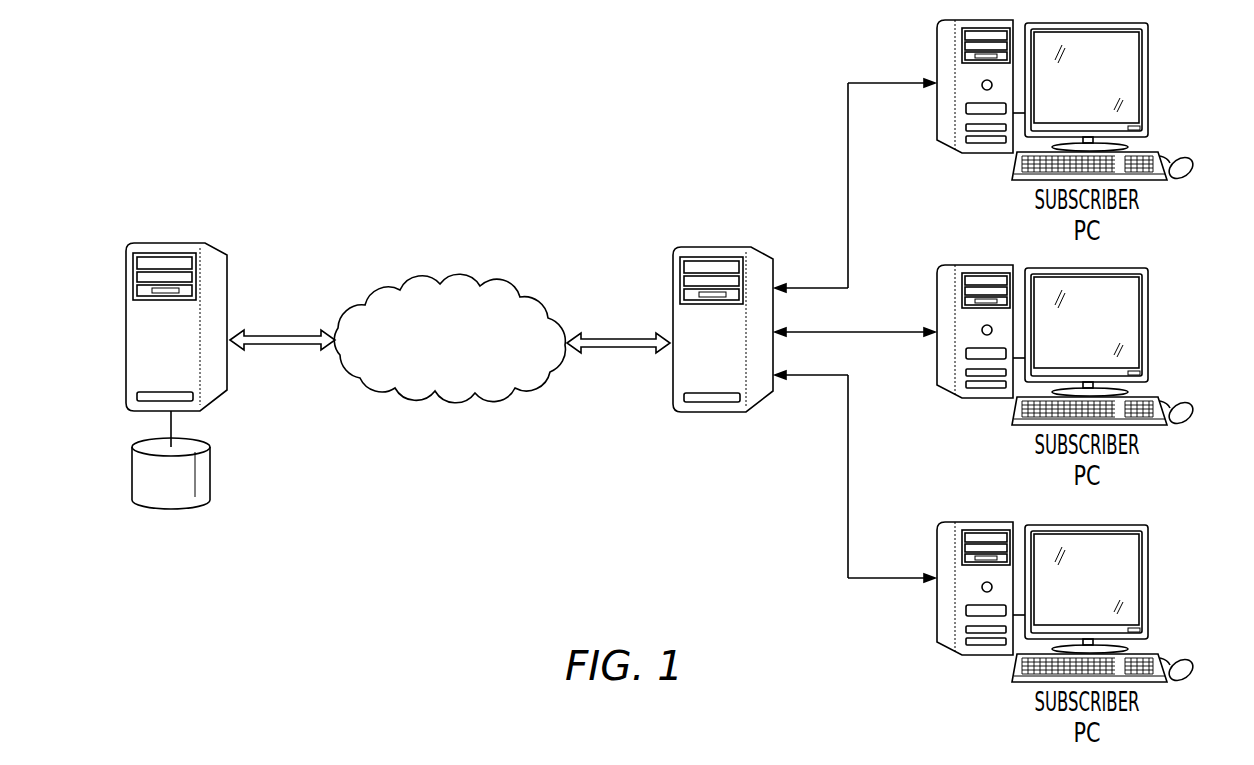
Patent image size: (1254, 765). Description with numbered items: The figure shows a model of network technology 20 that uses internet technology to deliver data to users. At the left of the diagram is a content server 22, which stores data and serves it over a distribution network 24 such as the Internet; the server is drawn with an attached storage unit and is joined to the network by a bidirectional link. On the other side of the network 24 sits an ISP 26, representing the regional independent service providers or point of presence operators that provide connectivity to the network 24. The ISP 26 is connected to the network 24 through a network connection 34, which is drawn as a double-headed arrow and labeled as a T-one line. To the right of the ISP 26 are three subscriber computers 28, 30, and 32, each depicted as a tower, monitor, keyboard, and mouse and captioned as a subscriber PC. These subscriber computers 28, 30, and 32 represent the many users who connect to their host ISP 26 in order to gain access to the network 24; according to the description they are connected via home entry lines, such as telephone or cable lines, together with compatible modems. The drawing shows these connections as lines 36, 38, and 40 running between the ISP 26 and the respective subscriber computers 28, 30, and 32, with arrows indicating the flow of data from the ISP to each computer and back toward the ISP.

The network technology 20 is at (352, 176).
The content server 22 is at (172, 243).
The distribution network 24 is at (453, 284).
The ISP 26 is at (719, 247).
The subscriber computer 28 is at (1148, 70).
The subscriber computer 30 is at (1148, 316).
The subscriber computer 32 is at (1148, 572).
The network connection 34 is at (620, 330).
The link between ISP and subscriber PC 28 36 is at (877, 83).
The link between ISP and subscriber PC 30 38 is at (890, 332).
The link between ISP and subscriber PC 32 40 is at (893, 578).